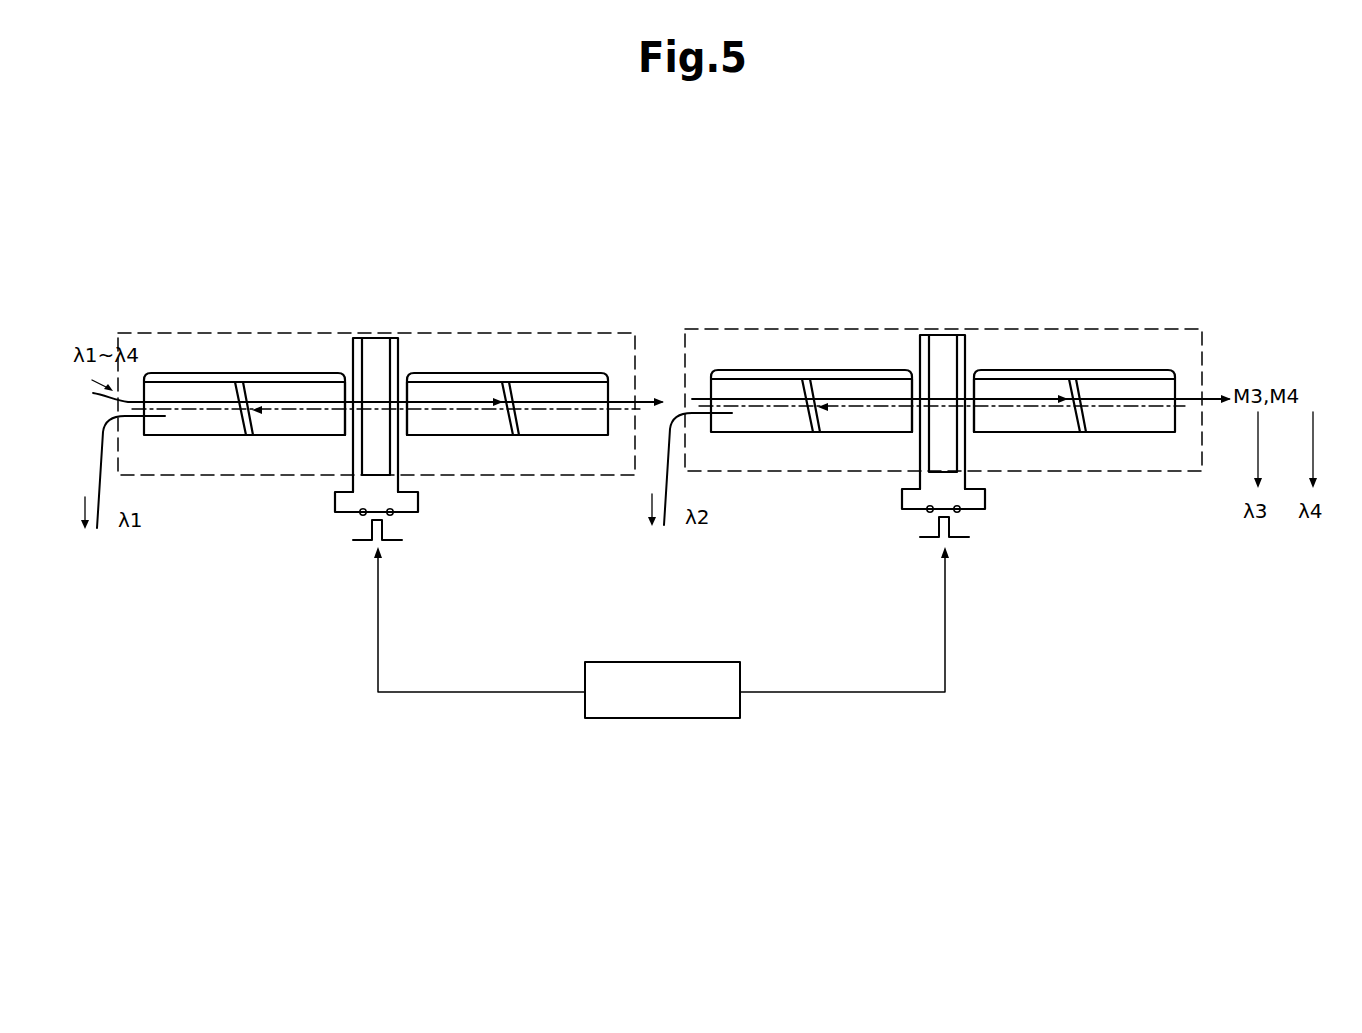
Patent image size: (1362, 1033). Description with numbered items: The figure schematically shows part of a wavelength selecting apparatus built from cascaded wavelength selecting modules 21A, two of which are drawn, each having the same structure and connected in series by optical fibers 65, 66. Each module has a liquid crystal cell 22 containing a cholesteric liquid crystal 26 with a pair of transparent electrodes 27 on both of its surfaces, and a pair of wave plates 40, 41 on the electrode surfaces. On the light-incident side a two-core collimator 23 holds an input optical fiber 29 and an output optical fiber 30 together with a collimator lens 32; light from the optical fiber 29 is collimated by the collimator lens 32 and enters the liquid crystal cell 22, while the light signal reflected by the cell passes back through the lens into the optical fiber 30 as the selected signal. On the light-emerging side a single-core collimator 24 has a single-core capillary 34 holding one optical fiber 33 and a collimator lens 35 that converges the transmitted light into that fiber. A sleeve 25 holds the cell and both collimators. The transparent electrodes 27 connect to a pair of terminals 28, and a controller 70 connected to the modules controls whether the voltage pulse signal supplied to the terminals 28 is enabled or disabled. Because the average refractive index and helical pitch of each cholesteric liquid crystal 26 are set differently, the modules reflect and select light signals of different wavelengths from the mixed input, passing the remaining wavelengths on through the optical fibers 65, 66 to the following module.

The wavelength selecting module 21A is at (554, 254).
The liquid crystal cell 22 is at (667, 357).
The two-core collimator 23 is at (243, 372).
The single-core collimator 24 is at (506, 372).
The sleeve 25 is at (189, 330).
The cholesteric liquid crystal 26 is at (366, 338).
The transparent electrodes 27 is at (353, 462).
The terminals 28 is at (356, 520).
The optical fiber 29 is at (173, 408).
The optical fiber 30 is at (222, 434).
The collimator lens 32 is at (272, 436).
The optical fiber 33 is at (533, 404).
The single-core capillary 34 is at (578, 434).
The collimator lens 35 is at (460, 434).
The wave plate 40 is at (348, 383).
The wave plate 41 is at (702, 367).
The optical fiber 65 is at (650, 396).
The optical fiber 66 is at (1192, 392).
The controller 70 is at (708, 660).